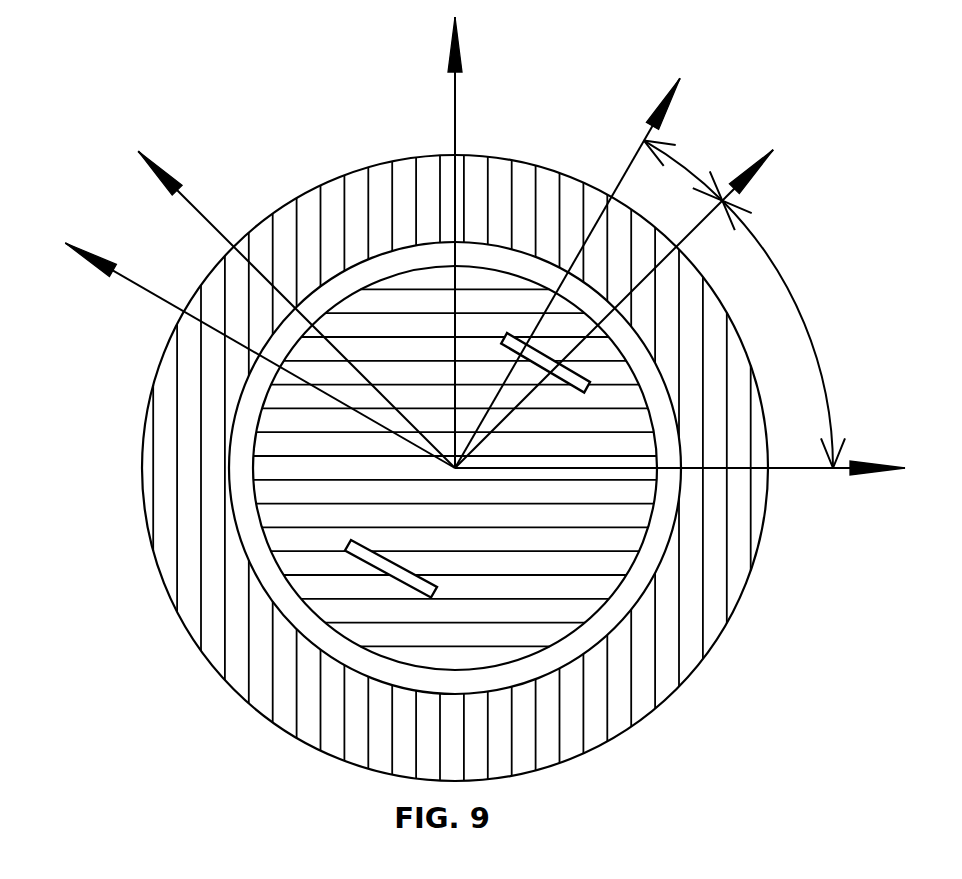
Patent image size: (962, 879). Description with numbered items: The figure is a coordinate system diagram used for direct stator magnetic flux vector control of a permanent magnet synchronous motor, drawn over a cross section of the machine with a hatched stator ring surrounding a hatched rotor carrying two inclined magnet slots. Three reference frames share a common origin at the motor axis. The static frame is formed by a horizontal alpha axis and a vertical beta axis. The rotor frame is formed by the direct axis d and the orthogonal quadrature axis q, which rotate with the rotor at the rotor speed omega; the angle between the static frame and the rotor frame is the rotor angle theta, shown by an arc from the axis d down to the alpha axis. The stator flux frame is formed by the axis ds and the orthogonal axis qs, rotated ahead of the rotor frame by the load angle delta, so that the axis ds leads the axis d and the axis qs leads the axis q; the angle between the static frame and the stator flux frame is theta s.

The d axis of the rotor rotating coordinate system d is at (625, 309).
The ds axis of the stator flux rotating coordinate system ds is at (567, 270).
The q axis of the rotor rotating coordinate system q is at (296, 291).
The qs axis of the stator flux rotating coordinate system qs is at (249, 355).